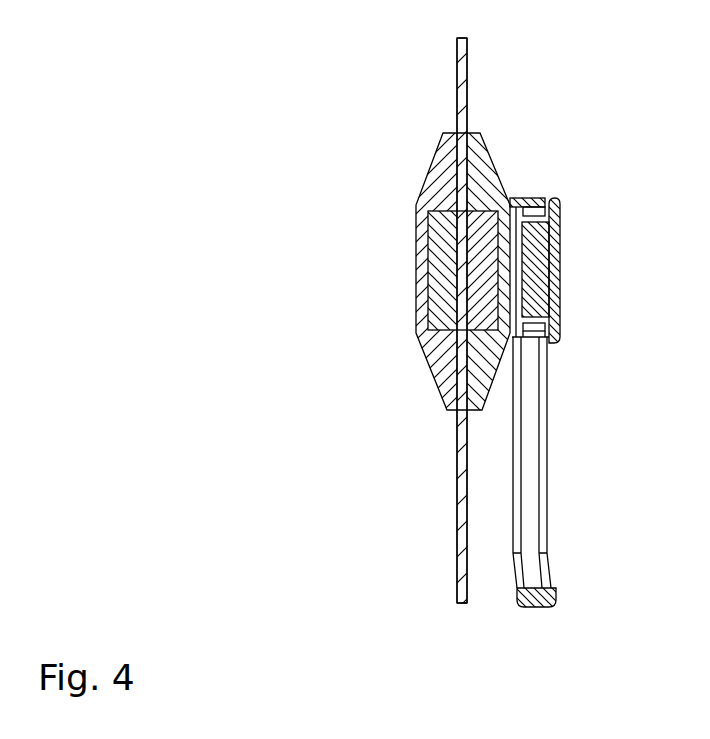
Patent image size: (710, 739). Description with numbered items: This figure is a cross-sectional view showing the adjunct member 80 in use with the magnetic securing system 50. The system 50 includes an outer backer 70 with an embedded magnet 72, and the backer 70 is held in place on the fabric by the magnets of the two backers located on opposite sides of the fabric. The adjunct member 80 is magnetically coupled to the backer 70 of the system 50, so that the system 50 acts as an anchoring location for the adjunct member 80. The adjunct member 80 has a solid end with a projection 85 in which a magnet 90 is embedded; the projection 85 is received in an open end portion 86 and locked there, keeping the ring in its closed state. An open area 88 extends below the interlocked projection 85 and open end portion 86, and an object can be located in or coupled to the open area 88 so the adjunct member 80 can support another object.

The magnetic securing system 50 is at (375, 292).
The outer backer 70 is at (499, 178).
The magnet 72 is at (511, 200).
The adjunct member 80 is at (589, 402).
The projection 85 is at (568, 224).
The open end portion 86 is at (543, 372).
The open area 88 is at (531, 518).
The magnet 90 is at (560, 320).